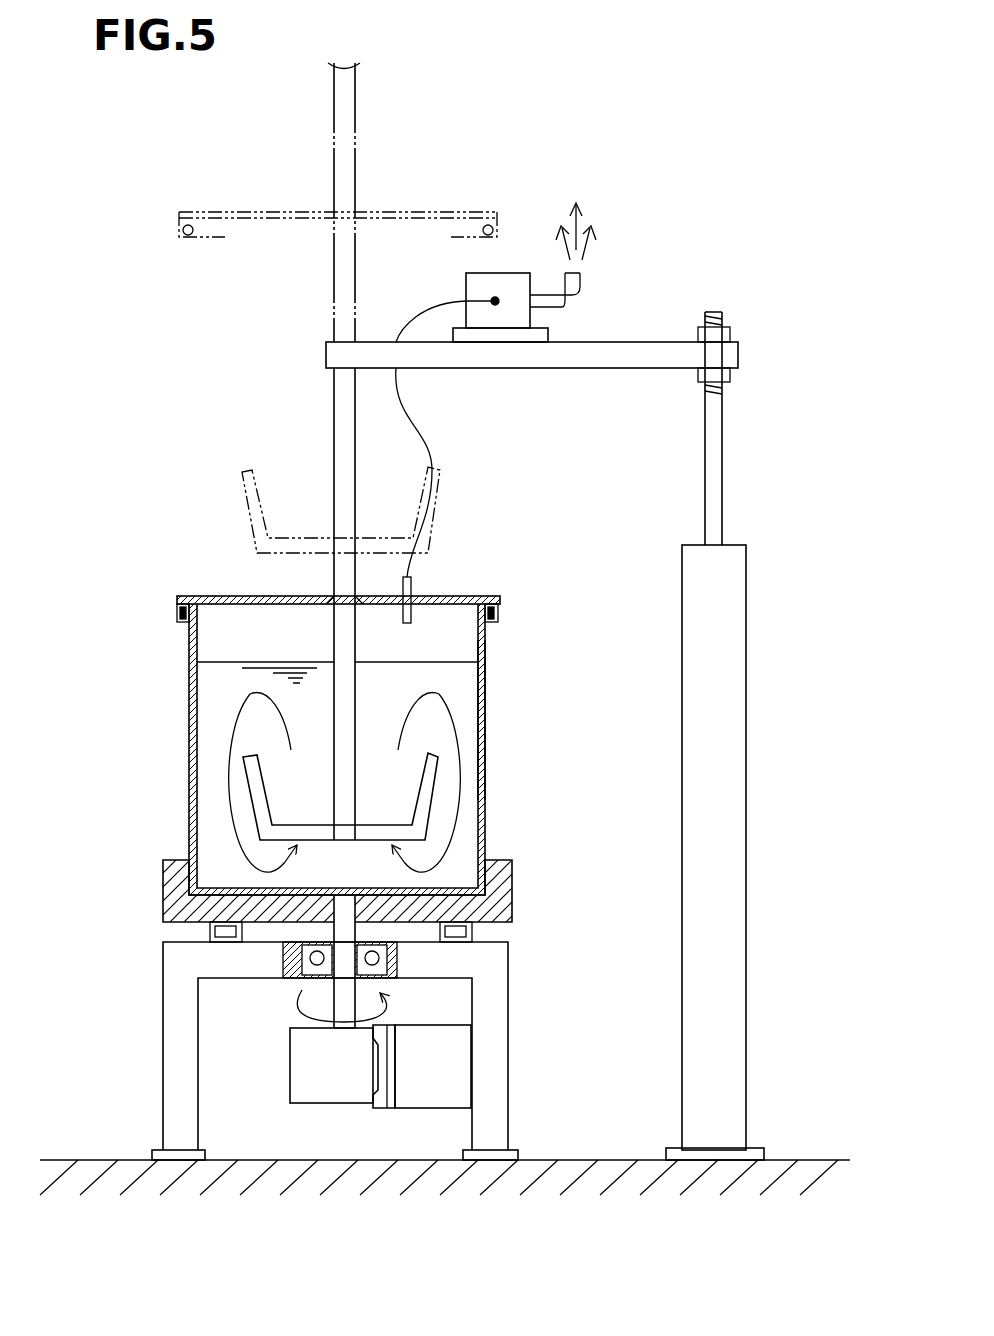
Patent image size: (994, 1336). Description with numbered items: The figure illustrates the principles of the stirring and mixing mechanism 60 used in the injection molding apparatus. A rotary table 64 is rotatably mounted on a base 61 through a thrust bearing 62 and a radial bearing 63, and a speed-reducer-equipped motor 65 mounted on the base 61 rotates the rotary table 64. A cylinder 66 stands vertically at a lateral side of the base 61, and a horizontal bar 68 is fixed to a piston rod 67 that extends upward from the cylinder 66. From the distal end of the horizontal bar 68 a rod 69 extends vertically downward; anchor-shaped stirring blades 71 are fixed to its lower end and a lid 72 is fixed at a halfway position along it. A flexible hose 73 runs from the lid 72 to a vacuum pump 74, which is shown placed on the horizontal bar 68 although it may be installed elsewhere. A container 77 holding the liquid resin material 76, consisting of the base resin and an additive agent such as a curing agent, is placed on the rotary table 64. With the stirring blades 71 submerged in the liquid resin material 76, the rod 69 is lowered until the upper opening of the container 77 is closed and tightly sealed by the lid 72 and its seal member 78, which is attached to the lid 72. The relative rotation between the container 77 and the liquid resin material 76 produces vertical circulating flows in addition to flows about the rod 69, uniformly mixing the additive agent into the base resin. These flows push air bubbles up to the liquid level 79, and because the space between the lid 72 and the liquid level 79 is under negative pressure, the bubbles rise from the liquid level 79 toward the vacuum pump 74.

The stirring and mixing mechanism 60 is at (203, 333).
The base 61 is at (163, 1060).
The thrust bearing 62 is at (210, 930).
The radial bearing 63 is at (302, 977).
The rotary table 64 is at (163, 877).
The speed-reducer-equipped motor 65 is at (302, 1063).
The cylinder 66 is at (746, 862).
The piston rod 67 is at (720, 438).
The horizontal bar 68 is at (538, 357).
The rod 69 is at (334, 414).
The stirring blades 71 is at (245, 790).
The lid 72 is at (235, 596).
The flexible hose 73 is at (430, 437).
The vacuum pump 74 is at (508, 273).
The liquid resin material 76 is at (213, 705).
The container 77 is at (486, 717).
The clamp 78 is at (499, 612).
The liquid level 79 is at (235, 658).